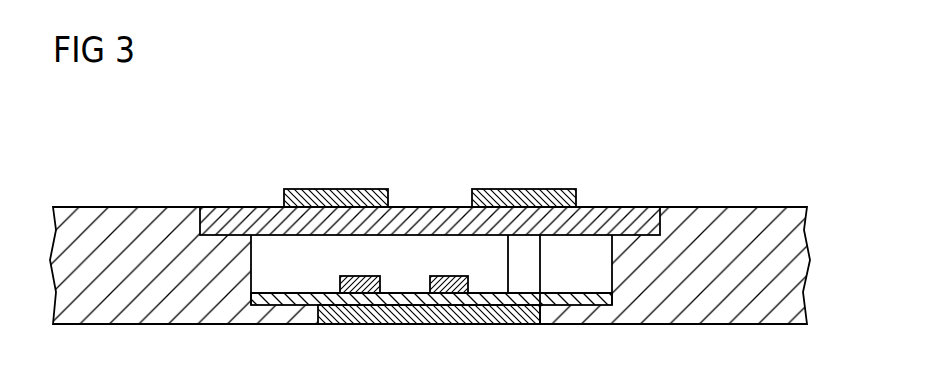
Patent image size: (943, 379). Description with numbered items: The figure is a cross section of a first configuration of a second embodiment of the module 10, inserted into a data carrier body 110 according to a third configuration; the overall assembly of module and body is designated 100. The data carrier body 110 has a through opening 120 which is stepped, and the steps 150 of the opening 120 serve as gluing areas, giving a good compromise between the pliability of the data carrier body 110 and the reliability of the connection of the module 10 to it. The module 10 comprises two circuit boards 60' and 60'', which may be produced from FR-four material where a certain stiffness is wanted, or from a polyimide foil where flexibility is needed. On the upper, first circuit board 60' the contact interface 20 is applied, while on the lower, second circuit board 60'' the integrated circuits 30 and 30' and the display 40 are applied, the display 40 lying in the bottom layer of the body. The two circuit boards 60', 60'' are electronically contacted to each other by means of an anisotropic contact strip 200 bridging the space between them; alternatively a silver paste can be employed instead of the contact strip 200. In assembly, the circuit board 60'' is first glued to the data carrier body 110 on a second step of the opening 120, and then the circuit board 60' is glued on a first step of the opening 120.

The sensor arrangement 100 is at (198, 158).
The module 10 is at (552, 172).
The data carrier body 110 is at (117, 207).
The through opening 120 is at (258, 278).
The steps 150 is at (633, 227).
The anisotropic contact strip 200 is at (532, 258).
The contact interface 20 is at (470, 200).
The integrated circuit 30 is at (336, 270).
The integrated circuit 30' is at (425, 270).
The display 40 is at (425, 312).
The first circuit board 60' is at (430, 195).
The second circuit board 60'' is at (431, 331).